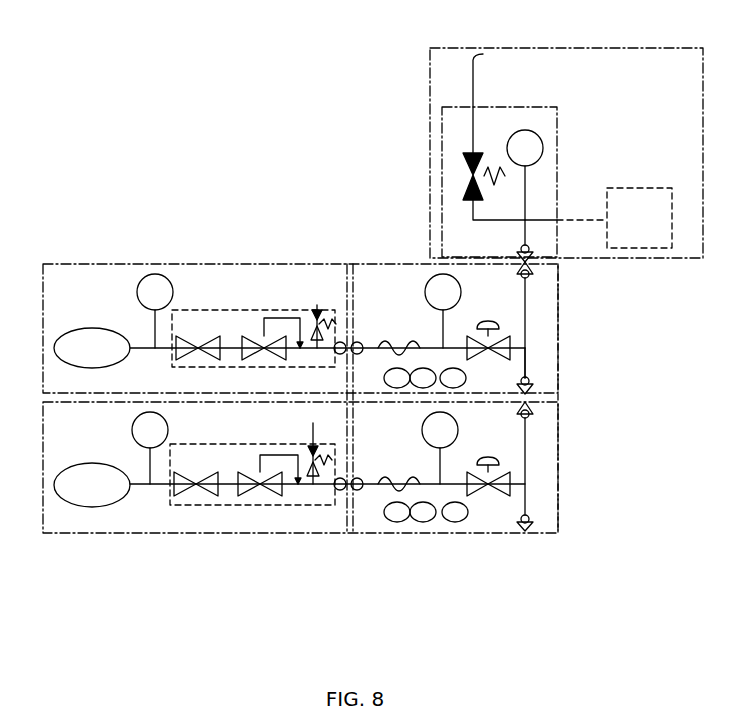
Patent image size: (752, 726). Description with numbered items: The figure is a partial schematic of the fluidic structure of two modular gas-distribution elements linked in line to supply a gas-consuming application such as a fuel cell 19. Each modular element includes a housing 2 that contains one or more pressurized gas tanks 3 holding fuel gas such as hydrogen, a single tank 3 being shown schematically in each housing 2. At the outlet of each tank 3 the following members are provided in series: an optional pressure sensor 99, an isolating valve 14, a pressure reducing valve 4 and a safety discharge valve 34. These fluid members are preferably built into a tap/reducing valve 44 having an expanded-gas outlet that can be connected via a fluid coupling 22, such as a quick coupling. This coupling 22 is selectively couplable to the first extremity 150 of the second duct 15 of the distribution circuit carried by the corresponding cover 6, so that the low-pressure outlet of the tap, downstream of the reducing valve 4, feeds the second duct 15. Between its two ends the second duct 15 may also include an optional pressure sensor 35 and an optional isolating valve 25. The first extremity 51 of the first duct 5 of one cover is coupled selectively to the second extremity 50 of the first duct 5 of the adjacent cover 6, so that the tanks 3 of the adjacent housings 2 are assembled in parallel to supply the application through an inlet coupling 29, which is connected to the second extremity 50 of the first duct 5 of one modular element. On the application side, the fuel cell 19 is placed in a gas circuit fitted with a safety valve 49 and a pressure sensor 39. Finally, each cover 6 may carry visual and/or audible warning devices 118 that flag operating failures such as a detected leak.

The housing 2 is at (196, 264).
The pressurized gas tank 3 is at (88, 328).
The pressure reducing valve 4 is at (281, 310).
The first duct 5 is at (527, 352).
The cover 6 is at (558, 357).
The isolating valve 14 is at (200, 335).
The second duct 15 is at (419, 342).
The fuel cell 19 is at (633, 188).
The fluid coupling 22 is at (343, 440).
The isolating valve 25 is at (514, 330).
The inlet coupling 29 is at (533, 250).
The safety discharge valve 34 is at (319, 318).
The pressure sensor 35 is at (443, 290).
The pressure sensor 39 is at (525, 148).
The tap/reducing valve 44 is at (232, 300).
The safety valve 49 is at (480, 150).
The second extremity of first duct 50 is at (533, 268).
The first extremity of first duct 51 is at (534, 382).
The pressure sensor 99 is at (153, 290).
The warning devices 118 is at (405, 387).
The first extremity of second duct 150 is at (359, 338).